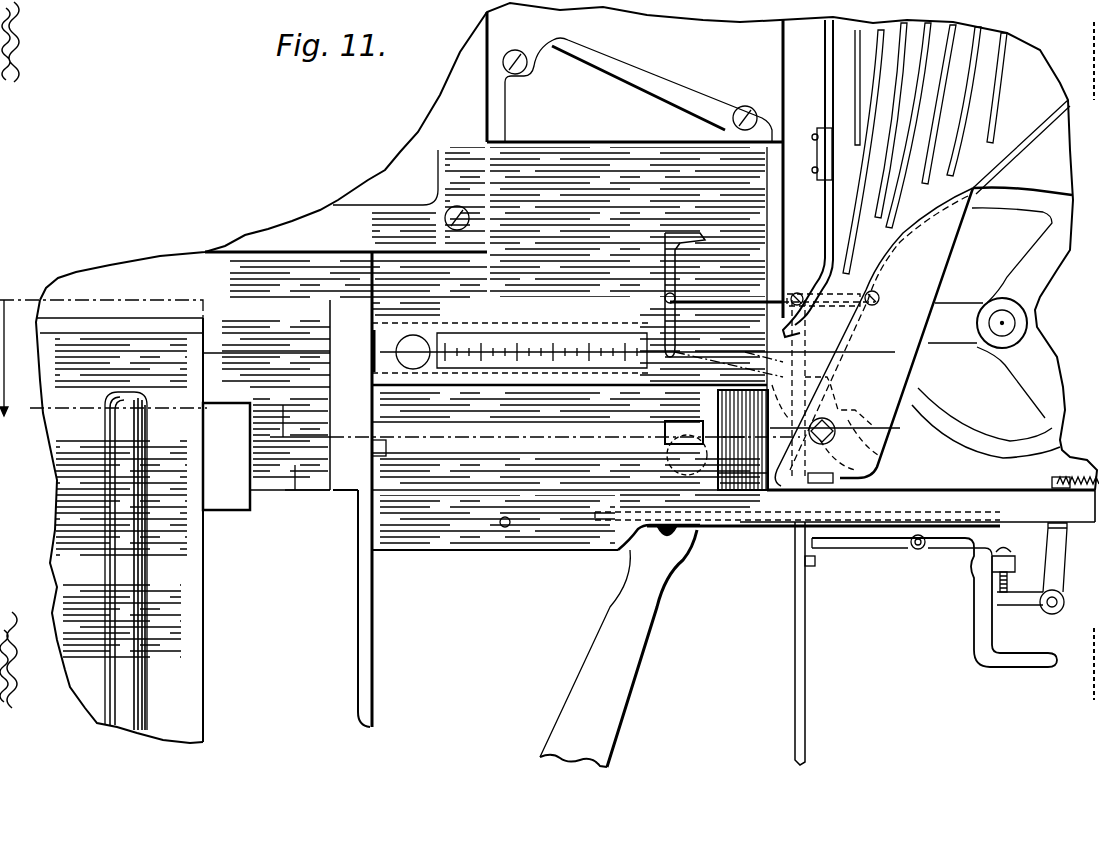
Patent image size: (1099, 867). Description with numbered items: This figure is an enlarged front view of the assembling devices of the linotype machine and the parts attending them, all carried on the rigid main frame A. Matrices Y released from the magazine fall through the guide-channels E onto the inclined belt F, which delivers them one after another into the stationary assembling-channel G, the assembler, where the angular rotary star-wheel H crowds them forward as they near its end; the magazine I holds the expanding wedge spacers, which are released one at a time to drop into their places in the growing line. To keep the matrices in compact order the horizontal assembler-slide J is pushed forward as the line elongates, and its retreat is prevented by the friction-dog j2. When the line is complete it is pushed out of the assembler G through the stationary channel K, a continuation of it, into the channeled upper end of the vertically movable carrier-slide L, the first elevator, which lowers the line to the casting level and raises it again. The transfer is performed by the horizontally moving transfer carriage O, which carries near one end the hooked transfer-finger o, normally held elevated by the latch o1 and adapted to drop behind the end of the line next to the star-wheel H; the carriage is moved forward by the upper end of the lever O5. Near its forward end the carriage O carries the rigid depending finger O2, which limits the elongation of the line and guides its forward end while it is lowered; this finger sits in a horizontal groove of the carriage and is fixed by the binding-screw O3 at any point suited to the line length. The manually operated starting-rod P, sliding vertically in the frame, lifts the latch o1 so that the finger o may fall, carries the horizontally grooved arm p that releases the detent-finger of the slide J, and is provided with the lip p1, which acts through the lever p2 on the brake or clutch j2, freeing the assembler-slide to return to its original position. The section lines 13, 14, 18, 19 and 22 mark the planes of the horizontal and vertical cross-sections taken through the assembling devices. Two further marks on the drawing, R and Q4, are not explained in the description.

The main frame A is at (100, 257).
The guide-channels E is at (905, 15).
The inclined belt F is at (1019, 146).
The spacer magazine I is at (635, 77).
The cover plate R is at (401, 190).
The carrier-slide (first elevator) L is at (119, 521).
The block Q4 is at (226, 456).
The stationary channel K is at (266, 405).
The assembler-slide J is at (480, 535).
The assembling-channel (assembler) G is at (585, 490).
The transfer carriage O is at (535, 323).
The depending finger O2 is at (367, 489).
The binding-screw O3 is at (418, 342).
The lever O5 is at (608, 683).
The transfer-finger o is at (703, 237).
The latch o1 is at (747, 304).
The matrices Y is at (668, 557).
The horizontally-grooved arm p is at (760, 528).
The lip p1 is at (817, 566).
The lever p2 is at (885, 544).
The starting-rod P is at (806, 351).
The star-wheel H is at (866, 494).
The friction-dog j2 is at (1040, 568).
The section line 13 is at (901, 418).
The section line 14 is at (840, 340).
The section line 18 is at (350, 660).
The section line 19 is at (245, 732).
The section line 22 is at (655, 690).